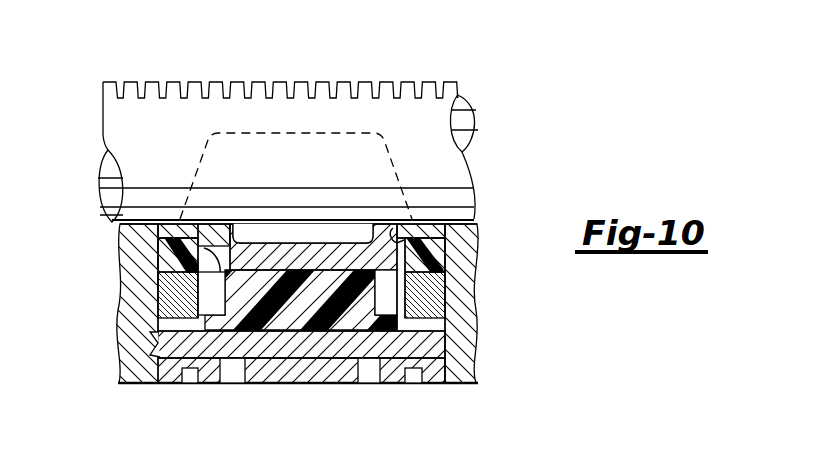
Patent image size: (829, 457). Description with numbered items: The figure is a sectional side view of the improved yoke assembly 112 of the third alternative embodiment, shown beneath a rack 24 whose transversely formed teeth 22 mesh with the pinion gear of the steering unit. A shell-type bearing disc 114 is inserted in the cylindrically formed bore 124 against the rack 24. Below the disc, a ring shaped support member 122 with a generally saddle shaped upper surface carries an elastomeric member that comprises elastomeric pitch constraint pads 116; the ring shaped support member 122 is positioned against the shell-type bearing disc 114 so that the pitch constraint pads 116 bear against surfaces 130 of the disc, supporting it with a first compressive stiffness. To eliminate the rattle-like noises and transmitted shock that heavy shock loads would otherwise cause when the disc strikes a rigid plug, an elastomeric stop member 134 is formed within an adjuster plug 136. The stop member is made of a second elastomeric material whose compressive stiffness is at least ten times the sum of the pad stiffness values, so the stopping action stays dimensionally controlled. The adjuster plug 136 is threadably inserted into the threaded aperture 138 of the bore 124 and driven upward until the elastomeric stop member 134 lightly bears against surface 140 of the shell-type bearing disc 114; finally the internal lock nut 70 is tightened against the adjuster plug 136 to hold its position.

The teeth 22 is at (272, 88).
The rack 24 is at (103, 112).
The internal lock nut 70 is at (212, 385).
The improved yoke assembly 112 is at (263, 114).
The shell-type bearing disc 114 is at (408, 270).
The elastomeric pitch constraint pads 116 is at (178, 270).
The ring shaped support member 122 is at (428, 268).
The cylindrically formed bore 124 is at (158, 290).
The surfaces 130 is at (210, 257).
The elastomeric stop member 134 is at (466, 385).
The adjuster plug 136 is at (279, 332).
The threaded aperture 138 is at (137, 385).
The surface 140 is at (468, 298).